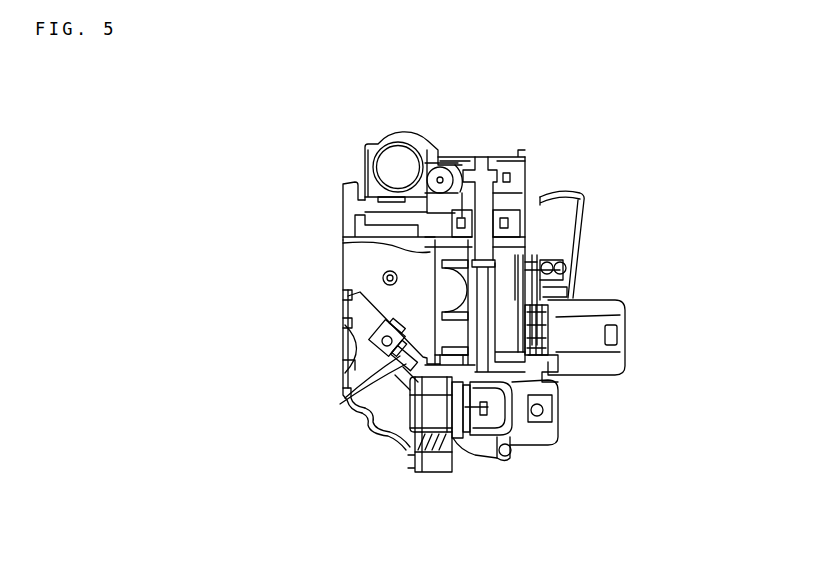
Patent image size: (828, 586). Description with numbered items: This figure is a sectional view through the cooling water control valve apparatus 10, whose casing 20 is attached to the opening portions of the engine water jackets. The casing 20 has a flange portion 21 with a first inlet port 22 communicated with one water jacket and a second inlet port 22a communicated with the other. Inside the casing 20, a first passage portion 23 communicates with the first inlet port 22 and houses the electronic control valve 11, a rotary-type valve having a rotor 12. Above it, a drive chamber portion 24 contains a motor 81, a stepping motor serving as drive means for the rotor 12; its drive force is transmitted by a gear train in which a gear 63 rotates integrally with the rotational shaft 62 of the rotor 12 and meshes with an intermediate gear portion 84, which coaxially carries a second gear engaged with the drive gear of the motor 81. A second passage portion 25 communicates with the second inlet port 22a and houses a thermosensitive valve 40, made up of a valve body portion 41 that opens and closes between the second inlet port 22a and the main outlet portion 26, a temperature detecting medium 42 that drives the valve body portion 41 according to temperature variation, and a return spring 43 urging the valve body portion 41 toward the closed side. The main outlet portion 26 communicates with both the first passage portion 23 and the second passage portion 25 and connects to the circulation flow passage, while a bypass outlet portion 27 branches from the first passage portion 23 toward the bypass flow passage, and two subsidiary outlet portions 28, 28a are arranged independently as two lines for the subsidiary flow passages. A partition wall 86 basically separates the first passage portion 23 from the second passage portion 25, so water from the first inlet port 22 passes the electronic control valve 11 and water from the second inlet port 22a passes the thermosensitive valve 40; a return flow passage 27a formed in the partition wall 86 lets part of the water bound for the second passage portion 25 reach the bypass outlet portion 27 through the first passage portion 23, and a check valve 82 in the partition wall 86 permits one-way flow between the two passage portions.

The cooling water control valve apparatus 10 is at (591, 224).
The electronic control valve 11 is at (432, 269).
The rotor 12 is at (533, 265).
The casing 20 is at (406, 445).
The flange portion 21 is at (343, 205).
The first inlet port 22 is at (342, 285).
The second inlet port 22a is at (338, 366).
The first passage portion 23 is at (343, 243).
The drive chamber portion 24 is at (457, 166).
The second passage portion 25 is at (396, 422).
The main outlet portion 26 is at (565, 243).
The bypass outlet portion 27 is at (372, 278).
The return flow passage 27a is at (400, 372).
The subsidiary outlet portion 28 is at (552, 320).
The subsidiary outlet portion 28a is at (617, 343).
The thermosensitive valve 40 is at (458, 422).
The valve body portion 41 is at (483, 432).
The temperature detecting medium 42 is at (440, 428).
The return spring 43 is at (428, 416).
The rotational shaft 62 is at (523, 262).
The gear 63 is at (483, 188).
The motor 81 is at (392, 158).
The check valve 82 is at (368, 352).
The intermediate gear portion 84 is at (443, 168).
The partition wall 86 is at (405, 366).